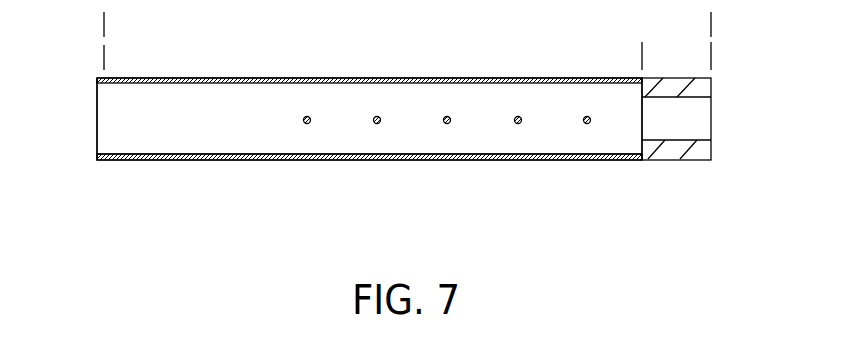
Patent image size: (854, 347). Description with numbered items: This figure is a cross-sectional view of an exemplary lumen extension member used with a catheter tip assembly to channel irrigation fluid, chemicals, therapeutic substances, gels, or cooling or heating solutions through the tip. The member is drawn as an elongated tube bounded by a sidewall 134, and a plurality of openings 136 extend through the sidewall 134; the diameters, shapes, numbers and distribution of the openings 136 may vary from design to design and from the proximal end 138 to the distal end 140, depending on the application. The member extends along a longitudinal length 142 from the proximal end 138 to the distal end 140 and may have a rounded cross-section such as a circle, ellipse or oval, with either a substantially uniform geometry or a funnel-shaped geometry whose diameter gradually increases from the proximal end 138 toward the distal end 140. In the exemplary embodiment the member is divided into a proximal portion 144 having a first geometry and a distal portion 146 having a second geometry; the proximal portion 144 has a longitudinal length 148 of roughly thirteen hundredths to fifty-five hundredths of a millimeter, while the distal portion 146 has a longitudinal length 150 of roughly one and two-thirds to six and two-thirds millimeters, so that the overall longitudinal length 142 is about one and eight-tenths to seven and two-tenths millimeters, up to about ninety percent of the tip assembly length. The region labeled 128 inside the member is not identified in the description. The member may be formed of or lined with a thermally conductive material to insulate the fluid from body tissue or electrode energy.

The panel 128 is at (191, 125).
The sidewall 134 is at (205, 158).
The openings 136 is at (377, 124).
The proximal end 138 is at (722, 125).
The distal end 140 is at (88, 132).
The longitudinal length 142 is at (710, 24).
The proximal portion 144 is at (713, 208).
The distal portion 146 is at (637, 208).
The longitudinal length 148 is at (710, 57).
The longitudinal length 150 is at (641, 57).